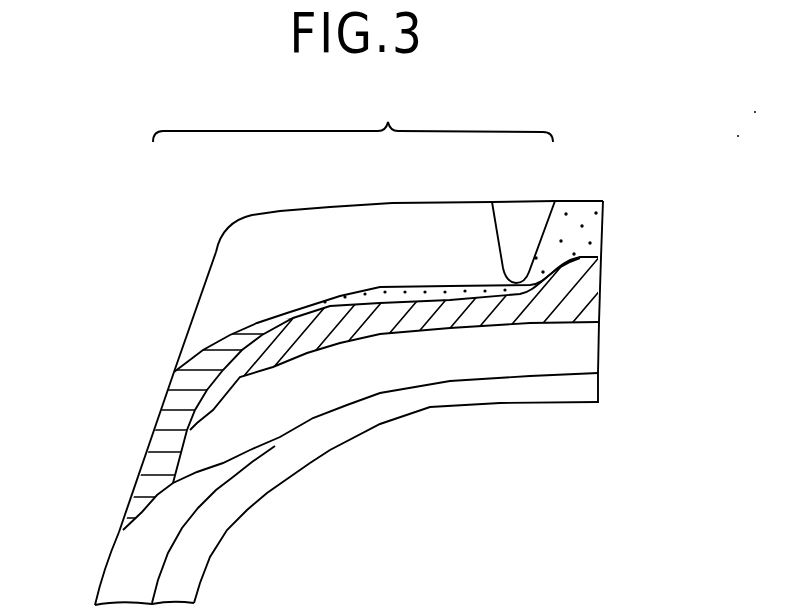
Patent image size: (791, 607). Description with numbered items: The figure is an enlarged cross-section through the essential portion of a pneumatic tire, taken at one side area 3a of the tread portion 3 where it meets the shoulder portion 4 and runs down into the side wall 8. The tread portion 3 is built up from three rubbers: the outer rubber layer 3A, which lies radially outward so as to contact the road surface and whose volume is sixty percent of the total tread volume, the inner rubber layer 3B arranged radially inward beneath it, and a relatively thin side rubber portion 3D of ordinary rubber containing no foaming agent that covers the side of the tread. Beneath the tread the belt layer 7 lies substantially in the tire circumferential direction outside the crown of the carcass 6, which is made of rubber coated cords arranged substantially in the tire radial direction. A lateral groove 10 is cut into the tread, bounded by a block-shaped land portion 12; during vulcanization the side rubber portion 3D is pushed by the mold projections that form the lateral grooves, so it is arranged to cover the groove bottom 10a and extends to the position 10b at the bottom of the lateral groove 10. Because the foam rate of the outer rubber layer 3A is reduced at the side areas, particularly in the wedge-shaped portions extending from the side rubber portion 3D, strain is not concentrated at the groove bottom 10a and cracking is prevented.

The side area 3a is at (353, 114).
The tread portion 3 is at (392, 203).
The outer rubber layer 3A is at (597, 232).
The inner rubber layer 3B is at (597, 289).
The side rubber portion 3D is at (168, 402).
The shoulder portion 4 is at (250, 216).
The carcass 6 is at (432, 409).
The belt layer 7 is at (593, 355).
The side wall 8 is at (117, 575).
The lateral groove 10 is at (218, 271).
The groove bottom 10a is at (462, 284).
The position of bottom of lateral groove 10b is at (372, 287).
The land portion 12 is at (330, 207).